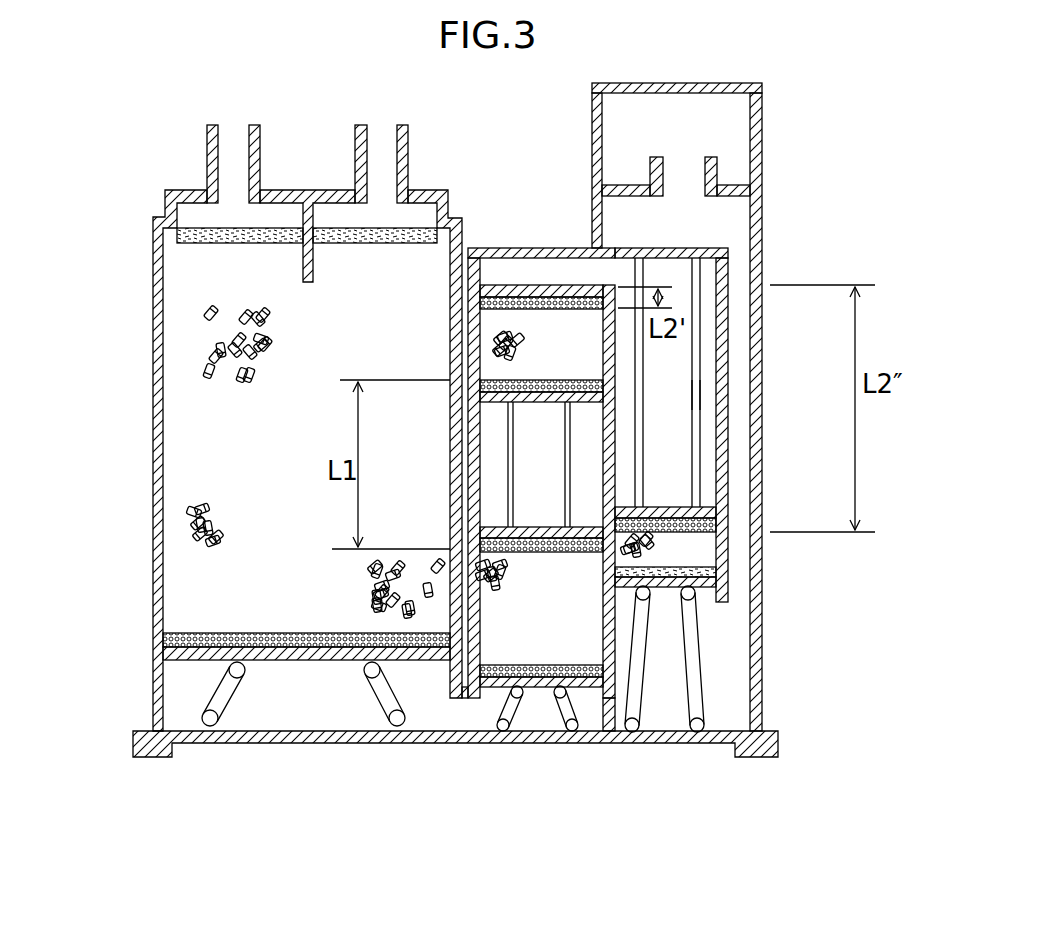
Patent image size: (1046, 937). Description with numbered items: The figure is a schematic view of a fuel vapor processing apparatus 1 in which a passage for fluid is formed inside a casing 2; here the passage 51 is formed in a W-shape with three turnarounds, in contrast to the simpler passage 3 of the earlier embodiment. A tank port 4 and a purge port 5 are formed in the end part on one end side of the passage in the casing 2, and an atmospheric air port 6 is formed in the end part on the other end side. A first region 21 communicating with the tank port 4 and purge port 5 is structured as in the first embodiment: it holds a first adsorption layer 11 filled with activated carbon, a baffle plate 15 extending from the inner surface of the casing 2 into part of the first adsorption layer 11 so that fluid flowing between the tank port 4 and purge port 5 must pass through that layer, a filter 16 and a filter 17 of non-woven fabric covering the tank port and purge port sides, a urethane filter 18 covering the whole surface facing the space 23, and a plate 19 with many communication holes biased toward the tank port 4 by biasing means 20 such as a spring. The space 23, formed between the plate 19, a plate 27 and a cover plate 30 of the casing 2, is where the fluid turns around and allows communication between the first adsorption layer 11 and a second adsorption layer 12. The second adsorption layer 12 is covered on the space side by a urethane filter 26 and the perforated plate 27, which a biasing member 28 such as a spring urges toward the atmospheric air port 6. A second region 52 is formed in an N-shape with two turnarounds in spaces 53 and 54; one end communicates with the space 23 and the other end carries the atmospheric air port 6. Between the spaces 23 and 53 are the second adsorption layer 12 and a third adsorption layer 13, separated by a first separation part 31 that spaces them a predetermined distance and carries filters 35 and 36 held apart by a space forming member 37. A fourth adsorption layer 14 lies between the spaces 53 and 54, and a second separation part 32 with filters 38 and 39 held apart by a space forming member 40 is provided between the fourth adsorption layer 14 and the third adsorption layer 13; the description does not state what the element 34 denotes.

The fuel vapor processing apparatus 1 is at (147, 210).
The casing 2 is at (157, 497).
The passage 3 is at (190, 447).
The tank port 4 is at (230, 158).
The purge port 5 is at (372, 150).
The atmospheric air port 6 is at (695, 160).
The first adsorption layer 11 is at (228, 292).
The second adsorption layer 12 is at (585, 637).
The third adsorption layer 13 is at (519, 290).
The fourth adsorption layer 14 is at (702, 556).
The baffle plate 15 is at (312, 273).
The filter 16 is at (243, 233).
The filter 17 is at (385, 237).
The filter 18 is at (258, 633).
The plate 19 is at (310, 650).
The biasing means 20 is at (207, 722).
The first region 21 is at (185, 615).
The space 23 is at (325, 710).
The filter 26 is at (560, 665).
The plate 27 is at (597, 683).
The biasing member 28 is at (556, 700).
The cover plate 30 is at (445, 741).
The first separation part 31 is at (493, 500).
The second separation part 32 is at (703, 418).
The filter plate 34 is at (728, 583).
The filter 35 is at (537, 527).
The filter 36 is at (480, 383).
The space forming member 37 is at (508, 445).
The filter 38 is at (495, 290).
The filter 39 is at (725, 515).
The space forming member 40 is at (570, 287).
The passage 51 is at (703, 395).
The second region 52 is at (678, 278).
The space 53 is at (541, 275).
The space 54 is at (712, 645).